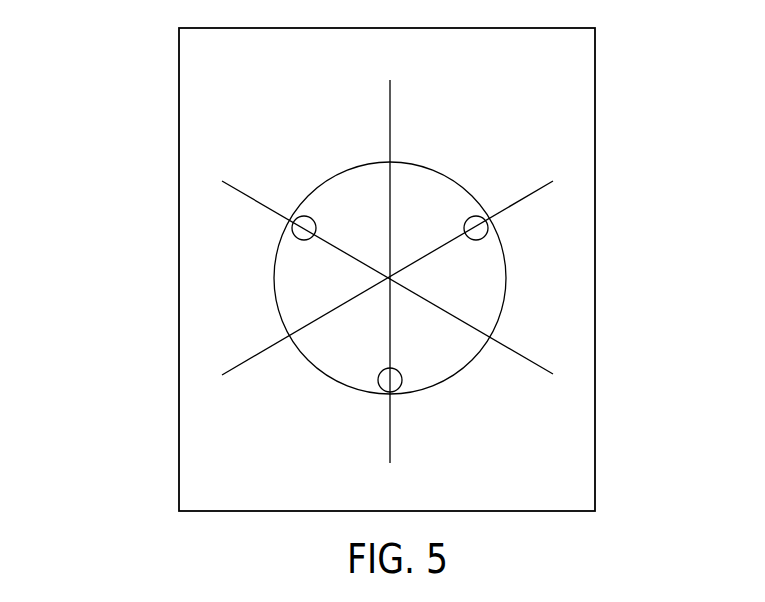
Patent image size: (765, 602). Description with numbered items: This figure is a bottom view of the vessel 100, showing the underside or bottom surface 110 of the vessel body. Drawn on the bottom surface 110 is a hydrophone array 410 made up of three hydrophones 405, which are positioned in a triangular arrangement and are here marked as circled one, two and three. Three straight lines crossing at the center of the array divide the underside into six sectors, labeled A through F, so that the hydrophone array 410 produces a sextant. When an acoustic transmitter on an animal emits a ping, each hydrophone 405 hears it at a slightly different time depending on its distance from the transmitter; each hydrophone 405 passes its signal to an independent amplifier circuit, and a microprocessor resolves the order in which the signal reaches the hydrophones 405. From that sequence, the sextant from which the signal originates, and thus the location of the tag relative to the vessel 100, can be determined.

The vessel 100 is at (125, 62).
The bottom surface of the vessel 110 is at (575, 52).
The hydrophone array 410 is at (348, 130).
The hydrophone 405 is at (295, 218).